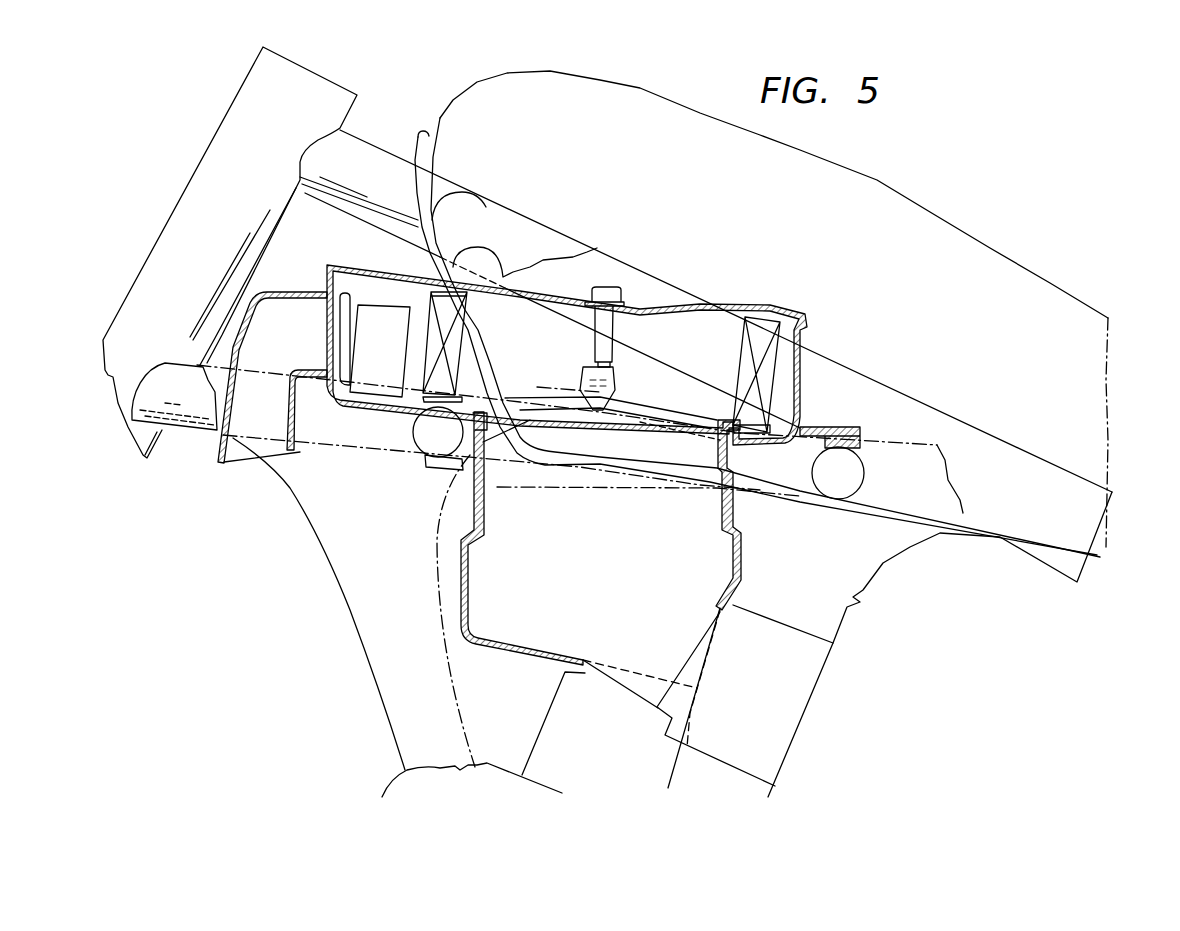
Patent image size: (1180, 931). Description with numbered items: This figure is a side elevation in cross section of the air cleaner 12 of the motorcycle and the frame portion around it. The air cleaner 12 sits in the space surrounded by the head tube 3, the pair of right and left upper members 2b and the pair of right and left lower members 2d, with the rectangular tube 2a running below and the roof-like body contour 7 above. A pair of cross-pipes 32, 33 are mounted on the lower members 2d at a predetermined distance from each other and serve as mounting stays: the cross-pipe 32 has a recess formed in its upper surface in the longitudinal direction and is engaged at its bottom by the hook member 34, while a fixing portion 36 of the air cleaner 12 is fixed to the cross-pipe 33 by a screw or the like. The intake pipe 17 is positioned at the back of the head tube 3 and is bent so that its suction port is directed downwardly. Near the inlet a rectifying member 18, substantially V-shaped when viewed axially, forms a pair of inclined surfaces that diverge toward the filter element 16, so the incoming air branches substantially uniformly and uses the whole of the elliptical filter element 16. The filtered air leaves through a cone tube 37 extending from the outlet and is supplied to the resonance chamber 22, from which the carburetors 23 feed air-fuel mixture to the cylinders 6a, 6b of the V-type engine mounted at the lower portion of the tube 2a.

The head tube 3 is at (200, 177).
The upper members 2b is at (372, 163).
The roof panel 7 is at (858, 195).
The air cleaner 12 is at (724, 296).
The rectifying member 18 is at (373, 307).
The filter element 16 is at (433, 290).
The fixing portion 36 is at (855, 428).
The lower members 2d is at (197, 420).
The cross-pipe 32 is at (420, 437).
The hook member 34 is at (452, 463).
The intake pipe 17 is at (300, 420).
The cone tube 37 is at (733, 473).
The cross-pipe 33 is at (827, 483).
The cylinder 6b is at (900, 562).
The resonance chamber 22 is at (462, 580).
The carburetor 23 is at (780, 650).
The tube 2a is at (383, 633).
The cylinder 6a is at (395, 787).